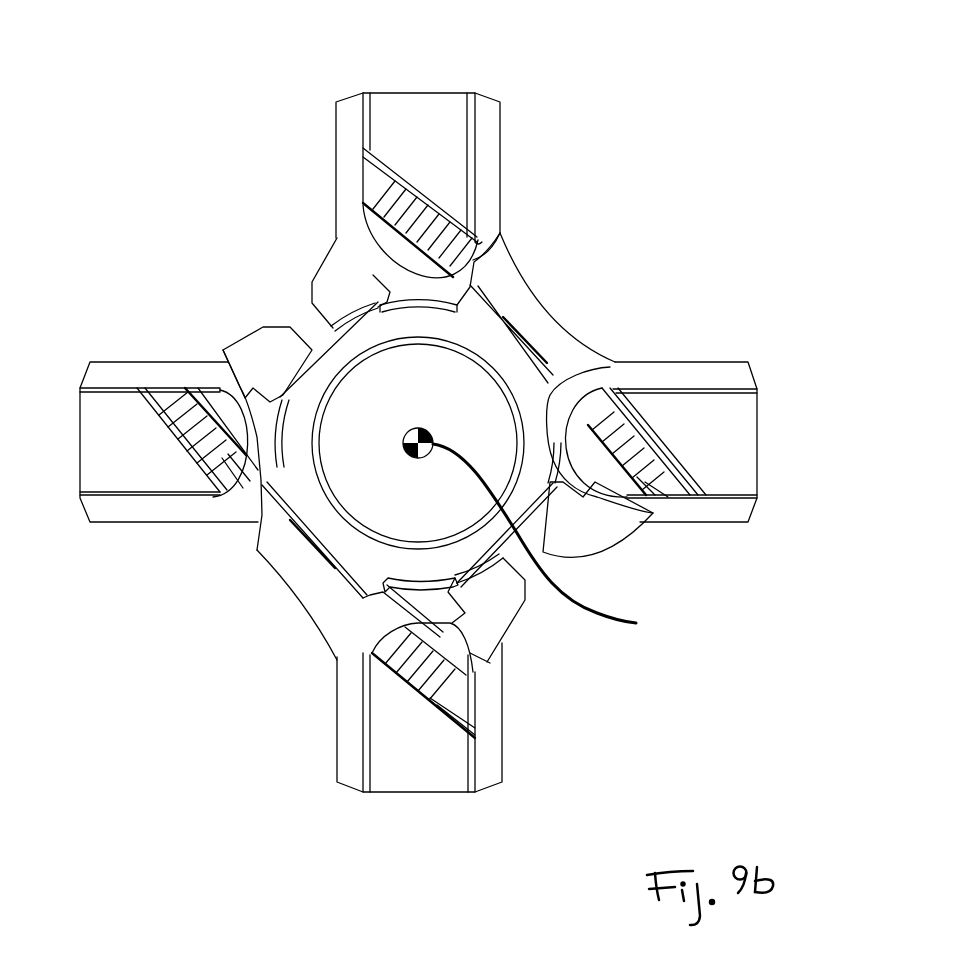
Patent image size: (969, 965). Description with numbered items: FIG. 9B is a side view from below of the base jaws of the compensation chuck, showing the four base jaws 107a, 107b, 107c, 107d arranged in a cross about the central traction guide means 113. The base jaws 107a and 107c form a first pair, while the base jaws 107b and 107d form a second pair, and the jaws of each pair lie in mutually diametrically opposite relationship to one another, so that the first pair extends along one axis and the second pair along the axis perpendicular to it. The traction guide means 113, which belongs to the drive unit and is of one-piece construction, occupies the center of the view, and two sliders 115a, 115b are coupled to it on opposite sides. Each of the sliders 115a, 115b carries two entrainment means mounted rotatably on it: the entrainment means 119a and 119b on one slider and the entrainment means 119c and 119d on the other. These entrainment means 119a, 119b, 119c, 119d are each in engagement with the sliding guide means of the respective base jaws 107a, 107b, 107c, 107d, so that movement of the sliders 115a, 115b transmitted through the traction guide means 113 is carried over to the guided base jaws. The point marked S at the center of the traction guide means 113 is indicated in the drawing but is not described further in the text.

The base jaw 107a is at (418, 121).
The base jaw 107b is at (735, 445).
The base jaw 107c is at (400, 760).
The base jaw 107d is at (110, 427).
The traction guide means 113 is at (333, 358).
The slider 115a is at (532, 318).
The slider 115b is at (292, 560).
The entrainment means 119a is at (433, 228).
The entrainment means 119b is at (655, 458).
The entrainment means 119c is at (427, 675).
The entrainment means 119d is at (213, 440).
The center point S is at (540, 540).